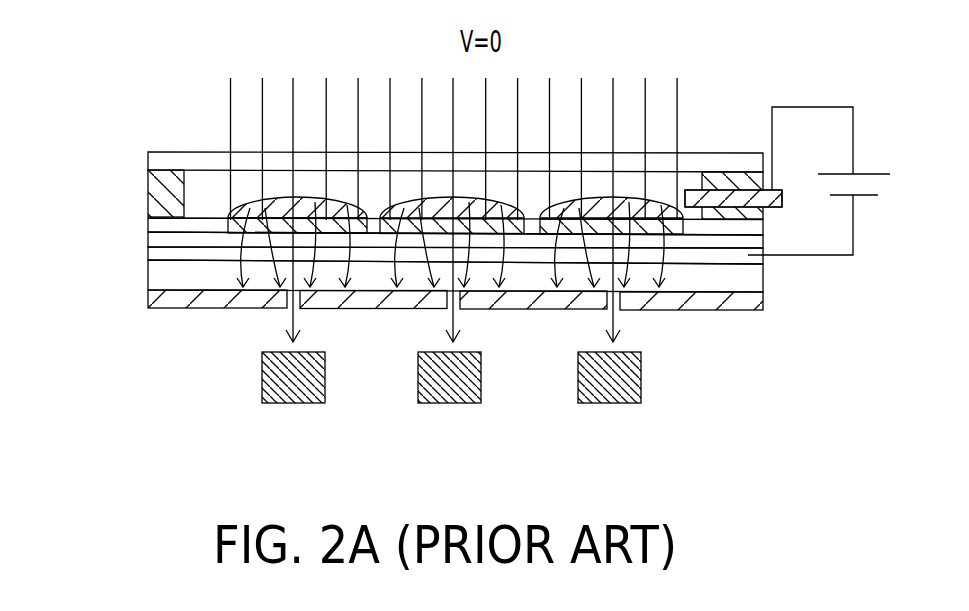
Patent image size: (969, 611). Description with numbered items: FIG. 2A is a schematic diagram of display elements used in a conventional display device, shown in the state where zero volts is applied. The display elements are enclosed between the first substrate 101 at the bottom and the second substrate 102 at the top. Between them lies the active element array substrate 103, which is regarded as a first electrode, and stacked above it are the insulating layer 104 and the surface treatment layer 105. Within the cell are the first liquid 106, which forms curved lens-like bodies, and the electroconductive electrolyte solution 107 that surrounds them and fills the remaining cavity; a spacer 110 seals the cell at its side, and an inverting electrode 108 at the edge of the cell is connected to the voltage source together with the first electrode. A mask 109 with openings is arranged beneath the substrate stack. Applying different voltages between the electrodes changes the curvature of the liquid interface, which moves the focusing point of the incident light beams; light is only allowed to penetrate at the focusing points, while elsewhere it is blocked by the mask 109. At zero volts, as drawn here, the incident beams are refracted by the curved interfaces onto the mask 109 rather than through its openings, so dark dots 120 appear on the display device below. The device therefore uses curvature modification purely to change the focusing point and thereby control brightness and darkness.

The first substrate 101 is at (167, 275).
The second substrate 102 is at (168, 160).
The active element array substrate 103 is at (165, 257).
The insulating layer 104 is at (162, 239).
The surface treatment layer 105 is at (165, 222).
The first liquid 106 is at (268, 283).
The electroconductive electrolyte solution 107 is at (220, 193).
The inverting electrode 108 is at (735, 182).
The mask 109 is at (165, 298).
The spacer 110 is at (165, 185).
The dark dots 120 is at (293, 404).